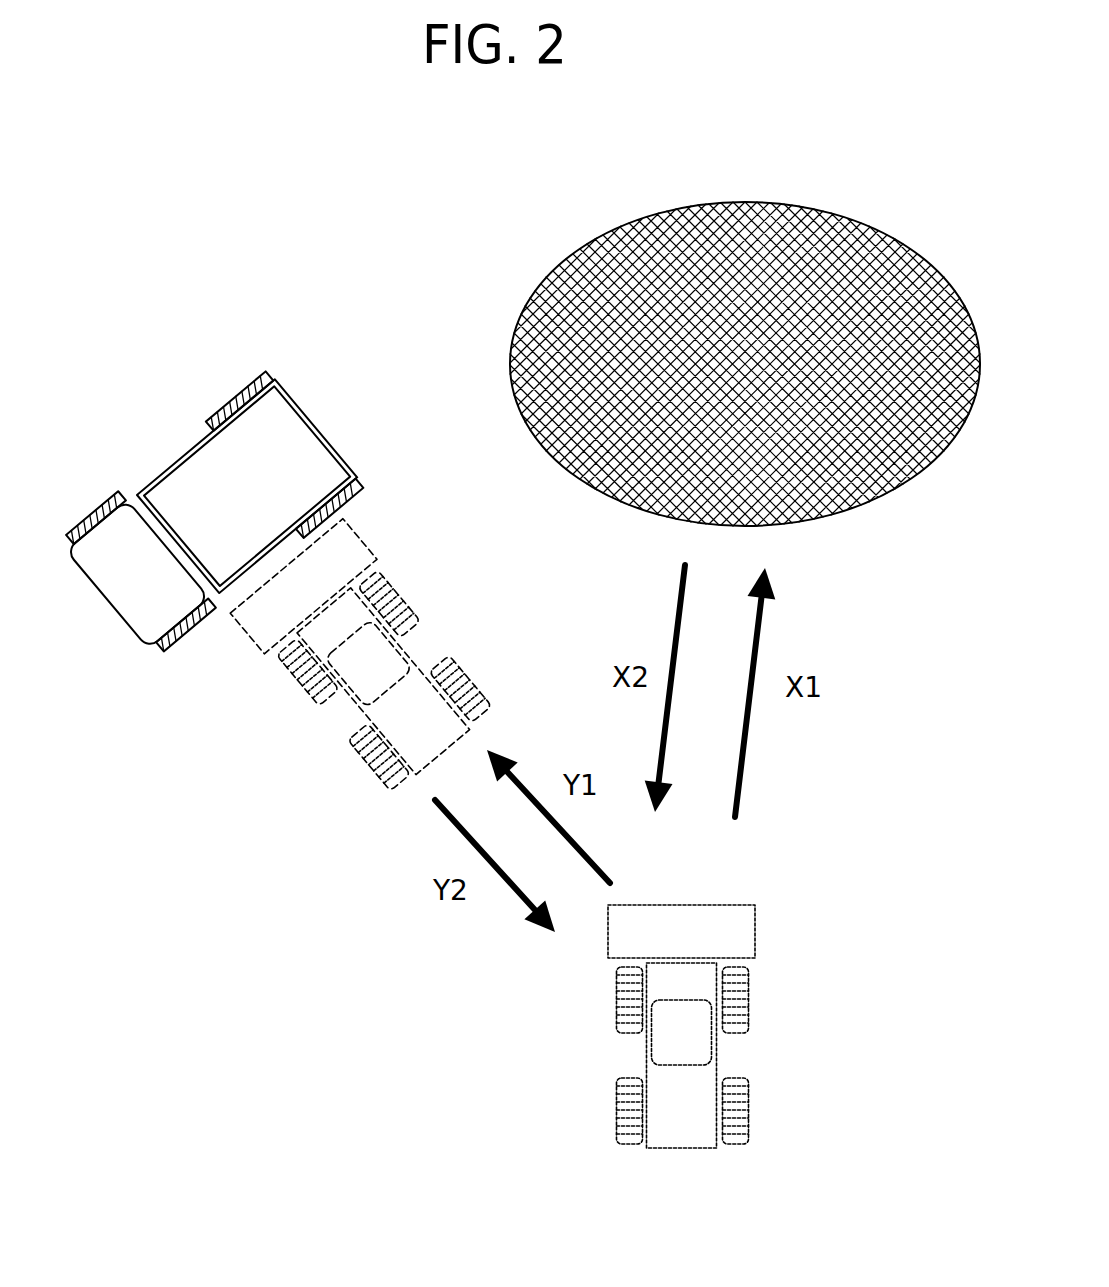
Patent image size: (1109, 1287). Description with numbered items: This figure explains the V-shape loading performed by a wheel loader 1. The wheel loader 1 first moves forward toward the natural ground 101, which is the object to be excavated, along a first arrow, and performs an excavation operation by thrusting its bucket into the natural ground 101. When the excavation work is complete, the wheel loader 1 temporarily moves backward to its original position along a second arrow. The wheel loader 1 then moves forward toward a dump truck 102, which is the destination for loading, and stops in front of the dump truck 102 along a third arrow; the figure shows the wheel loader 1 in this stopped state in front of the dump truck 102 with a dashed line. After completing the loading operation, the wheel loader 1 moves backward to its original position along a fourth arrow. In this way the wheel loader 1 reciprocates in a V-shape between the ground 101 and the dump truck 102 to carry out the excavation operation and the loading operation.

The wheel loader 1 is at (294, 742).
The natural ground 101 is at (717, 227).
The dump truck 102 is at (172, 414).